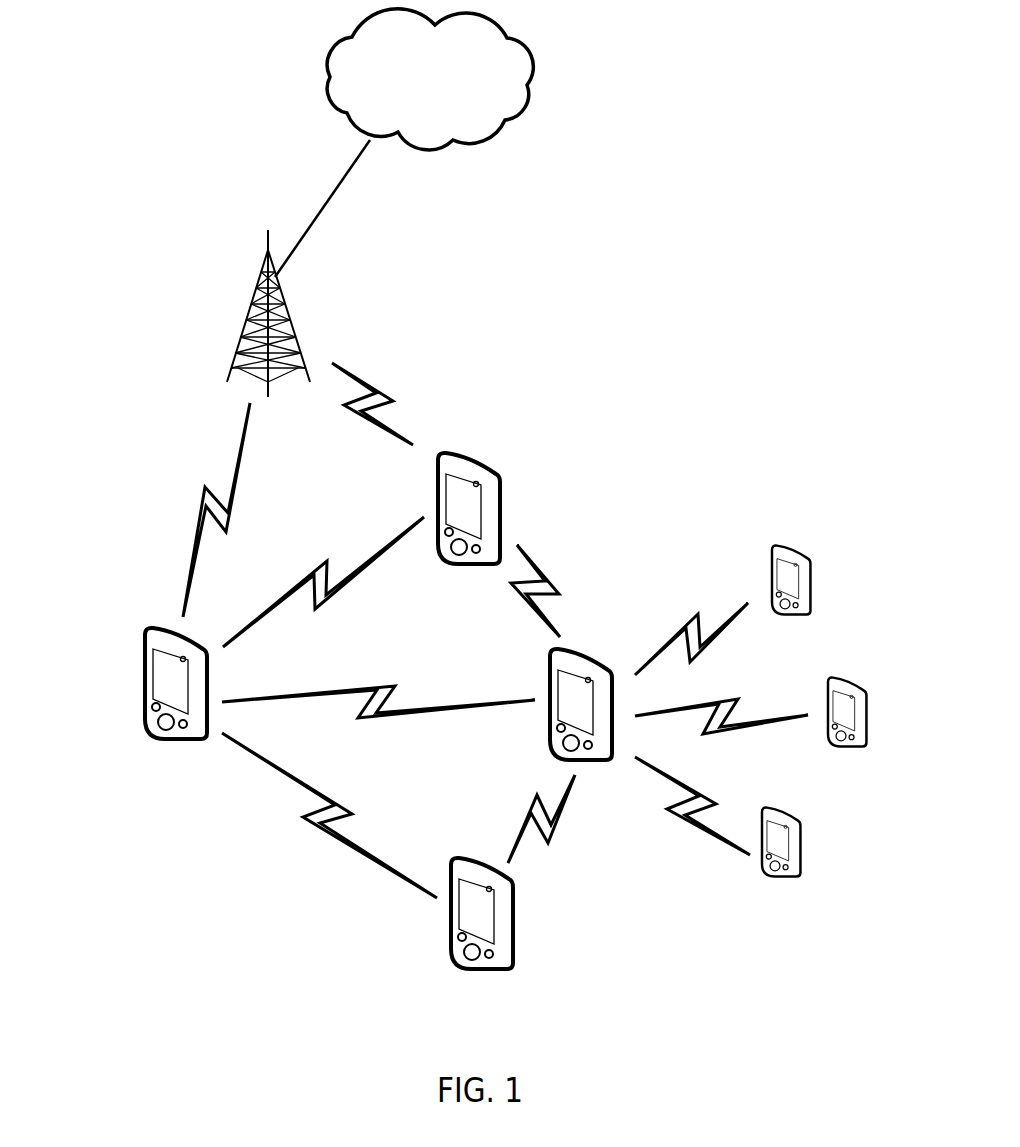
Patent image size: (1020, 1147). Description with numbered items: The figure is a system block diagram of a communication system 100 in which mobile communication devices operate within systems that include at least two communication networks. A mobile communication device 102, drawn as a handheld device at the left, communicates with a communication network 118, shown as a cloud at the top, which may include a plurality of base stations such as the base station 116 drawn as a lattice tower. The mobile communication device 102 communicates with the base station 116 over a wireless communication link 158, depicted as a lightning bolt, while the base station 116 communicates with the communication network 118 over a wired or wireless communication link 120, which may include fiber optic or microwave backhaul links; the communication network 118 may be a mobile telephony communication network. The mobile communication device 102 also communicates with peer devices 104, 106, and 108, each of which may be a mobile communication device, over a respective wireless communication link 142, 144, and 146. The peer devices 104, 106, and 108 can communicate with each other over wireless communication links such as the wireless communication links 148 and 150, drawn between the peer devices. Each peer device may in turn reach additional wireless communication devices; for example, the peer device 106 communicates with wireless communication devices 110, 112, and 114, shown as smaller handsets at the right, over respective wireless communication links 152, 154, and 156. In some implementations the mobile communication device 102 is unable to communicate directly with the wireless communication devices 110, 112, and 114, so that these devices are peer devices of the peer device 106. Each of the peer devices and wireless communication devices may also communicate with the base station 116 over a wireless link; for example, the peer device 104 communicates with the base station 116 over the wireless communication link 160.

The communication system 100 is at (491, 536).
The mobile communication device 102 is at (158, 735).
The peer device 104 is at (500, 480).
The peer device 106 is at (582, 657).
The peer device 108 is at (513, 955).
The wireless communication device 110 is at (798, 548).
The wireless communication device 112 is at (838, 675).
The wireless communication device 114 is at (803, 823).
The base station 116 is at (282, 305).
The communication network 118 is at (414, 115).
The communication link 120 is at (332, 193).
The wireless communication link 142 is at (322, 565).
The wireless communication link 144 is at (385, 683).
The wireless communication link 146 is at (320, 832).
The wireless communication link 148 is at (533, 597).
The wireless communication link 150 is at (530, 810).
The wireless communication link 152 is at (717, 625).
The wireless communication link 154 is at (720, 730).
The wireless communication link 156 is at (693, 823).
The wireless communication link 158 is at (205, 495).
The wireless communication link 160 is at (367, 413).